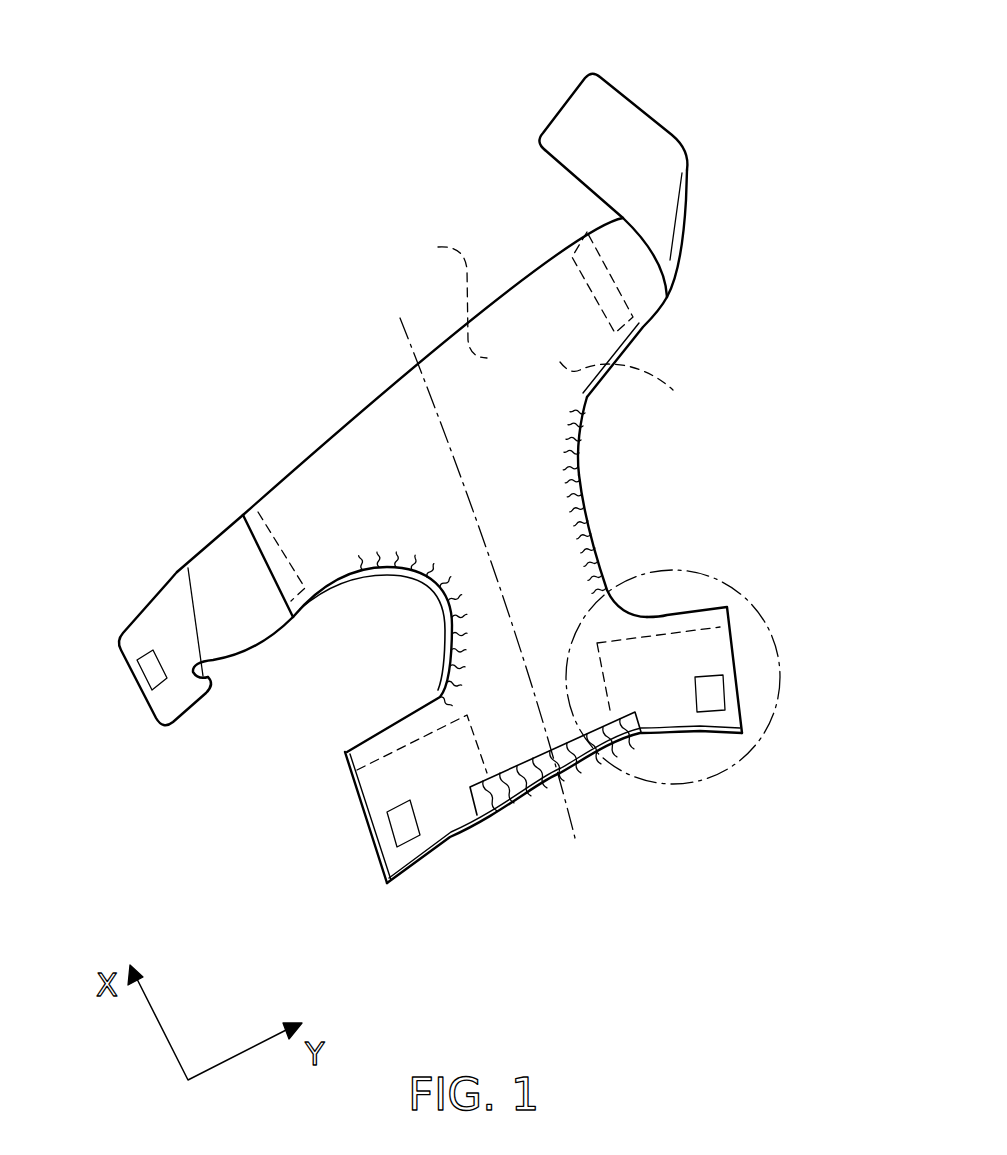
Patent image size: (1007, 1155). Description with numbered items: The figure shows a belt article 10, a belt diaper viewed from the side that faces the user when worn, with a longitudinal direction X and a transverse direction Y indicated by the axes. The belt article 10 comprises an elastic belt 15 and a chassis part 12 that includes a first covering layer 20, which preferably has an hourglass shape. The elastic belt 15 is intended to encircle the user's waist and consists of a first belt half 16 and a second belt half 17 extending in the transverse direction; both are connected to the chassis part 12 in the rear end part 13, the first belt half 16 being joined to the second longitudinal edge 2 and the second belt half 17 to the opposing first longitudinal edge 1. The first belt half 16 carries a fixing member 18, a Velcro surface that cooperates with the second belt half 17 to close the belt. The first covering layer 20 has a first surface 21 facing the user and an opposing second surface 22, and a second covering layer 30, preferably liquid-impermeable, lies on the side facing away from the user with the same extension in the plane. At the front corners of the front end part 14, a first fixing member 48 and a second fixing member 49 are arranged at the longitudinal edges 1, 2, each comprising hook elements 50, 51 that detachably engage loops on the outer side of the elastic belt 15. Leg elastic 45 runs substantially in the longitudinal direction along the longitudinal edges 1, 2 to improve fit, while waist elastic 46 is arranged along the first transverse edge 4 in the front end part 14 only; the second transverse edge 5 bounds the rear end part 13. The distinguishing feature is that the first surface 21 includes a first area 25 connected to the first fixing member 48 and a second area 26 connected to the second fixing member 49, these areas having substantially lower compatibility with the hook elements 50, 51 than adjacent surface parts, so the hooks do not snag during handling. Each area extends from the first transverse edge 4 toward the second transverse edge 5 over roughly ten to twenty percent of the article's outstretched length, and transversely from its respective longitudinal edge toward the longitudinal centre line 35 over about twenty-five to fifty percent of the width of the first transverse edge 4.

The first longitudinal edge 1 is at (597, 550).
The second longitudinal edge 2 is at (447, 612).
The first transverse edge 4 is at (580, 748).
The second transverse edge 5 is at (358, 408).
The belt article 10 is at (187, 288).
The chassis part 12 is at (523, 457).
The rear end part 13 is at (307, 497).
The front end part 14 is at (565, 705).
The elastic belt 15 is at (643, 150).
The first belt half 16 is at (150, 630).
The second belt half 17 is at (602, 113).
The fixing member 18 is at (147, 668).
The first covering layer 20 is at (526, 308).
The first surface 21 is at (543, 400).
The second surface 22 is at (636, 384).
The first area 25 is at (713, 648).
The second area 26 is at (380, 782).
The second covering layer 30 is at (443, 296).
The longitudinal centre line 35 is at (402, 335).
The leg elastic 45 is at (438, 587).
The waist elastic 46 is at (522, 730).
The first fixing member 48 is at (713, 685).
The second fixing member 49 is at (378, 848).
The hook element 50 is at (717, 697).
The hook element 51 is at (393, 815).